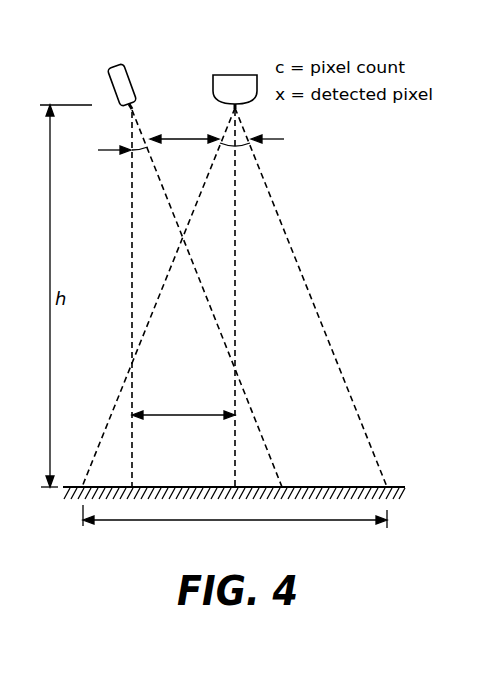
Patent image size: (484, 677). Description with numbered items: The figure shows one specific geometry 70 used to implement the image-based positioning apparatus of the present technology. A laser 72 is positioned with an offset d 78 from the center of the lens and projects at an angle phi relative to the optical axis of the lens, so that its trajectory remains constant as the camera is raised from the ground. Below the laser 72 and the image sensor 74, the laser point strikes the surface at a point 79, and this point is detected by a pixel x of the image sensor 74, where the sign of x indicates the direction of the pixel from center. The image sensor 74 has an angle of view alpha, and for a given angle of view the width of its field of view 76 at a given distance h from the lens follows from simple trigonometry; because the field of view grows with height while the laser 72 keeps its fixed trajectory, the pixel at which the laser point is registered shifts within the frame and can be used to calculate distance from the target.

The geometry 70 is at (351, 176).
The laser 72 is at (112, 64).
The image sensor 74 is at (233, 74).
The field of view width 76 is at (352, 521).
The offset from the center of the lens 78 is at (207, 412).
The point where the laser strikes the surface 79 is at (332, 481).